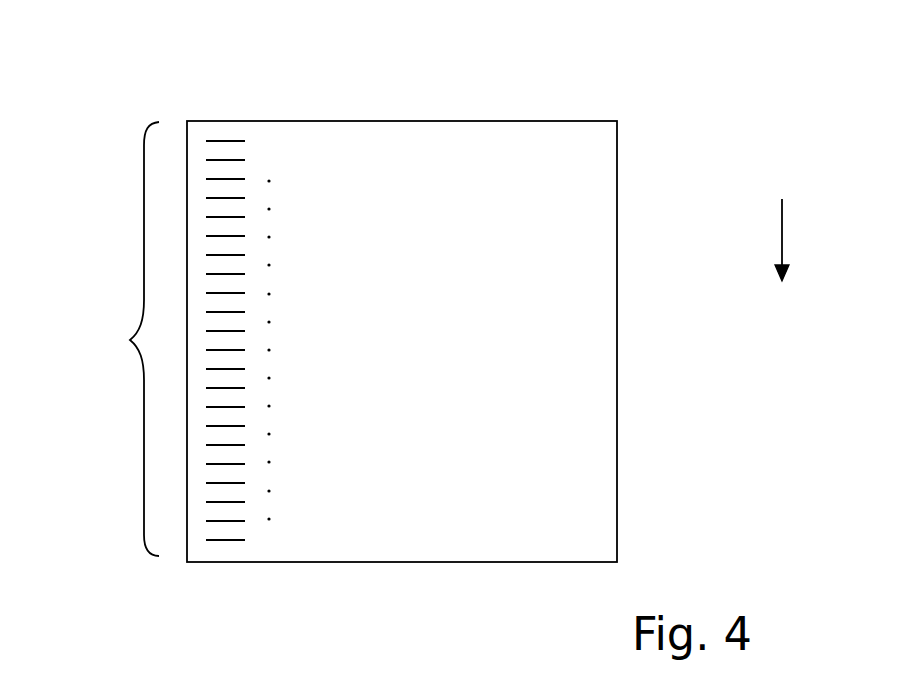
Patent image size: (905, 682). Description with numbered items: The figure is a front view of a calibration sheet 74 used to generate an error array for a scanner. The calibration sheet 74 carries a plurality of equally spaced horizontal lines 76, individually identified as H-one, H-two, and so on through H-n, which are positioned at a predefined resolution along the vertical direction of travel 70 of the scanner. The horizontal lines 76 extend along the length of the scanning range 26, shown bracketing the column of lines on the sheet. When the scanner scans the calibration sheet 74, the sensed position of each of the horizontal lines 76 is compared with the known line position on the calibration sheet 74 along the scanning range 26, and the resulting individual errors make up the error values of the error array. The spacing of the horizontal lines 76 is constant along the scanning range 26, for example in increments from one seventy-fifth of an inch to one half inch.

The scanning range 26 is at (130, 340).
The direction of travel 70 is at (782, 239).
The calibration sheet 74 is at (617, 220).
The horizontal lines 76 is at (229, 92).